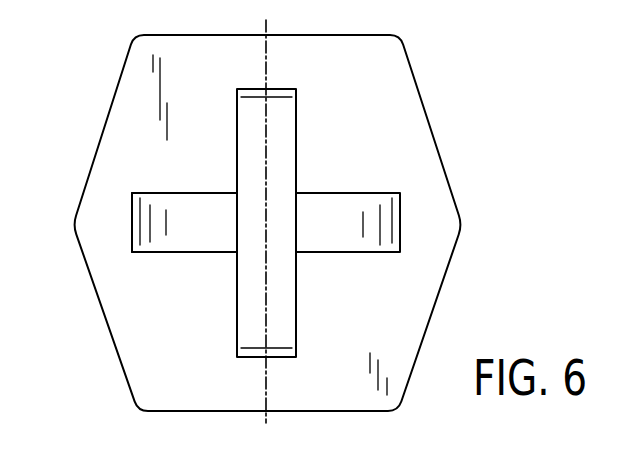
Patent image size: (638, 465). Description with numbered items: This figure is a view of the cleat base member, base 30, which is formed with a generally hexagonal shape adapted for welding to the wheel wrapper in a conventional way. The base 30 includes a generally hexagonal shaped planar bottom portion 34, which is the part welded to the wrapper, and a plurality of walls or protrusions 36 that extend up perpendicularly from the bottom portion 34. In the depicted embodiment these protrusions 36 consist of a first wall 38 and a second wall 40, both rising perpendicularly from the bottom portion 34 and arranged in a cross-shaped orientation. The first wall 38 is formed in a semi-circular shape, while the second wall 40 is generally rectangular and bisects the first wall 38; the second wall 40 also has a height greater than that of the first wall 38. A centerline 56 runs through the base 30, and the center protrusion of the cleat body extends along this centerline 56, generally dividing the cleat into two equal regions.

The base 30 is at (441, 71).
The bottom portion 34 is at (103, 133).
The walls or protrusions 36 is at (309, 128).
The first wall 38 is at (348, 252).
The second wall 40 is at (296, 305).
The centerline 56 is at (265, 382).